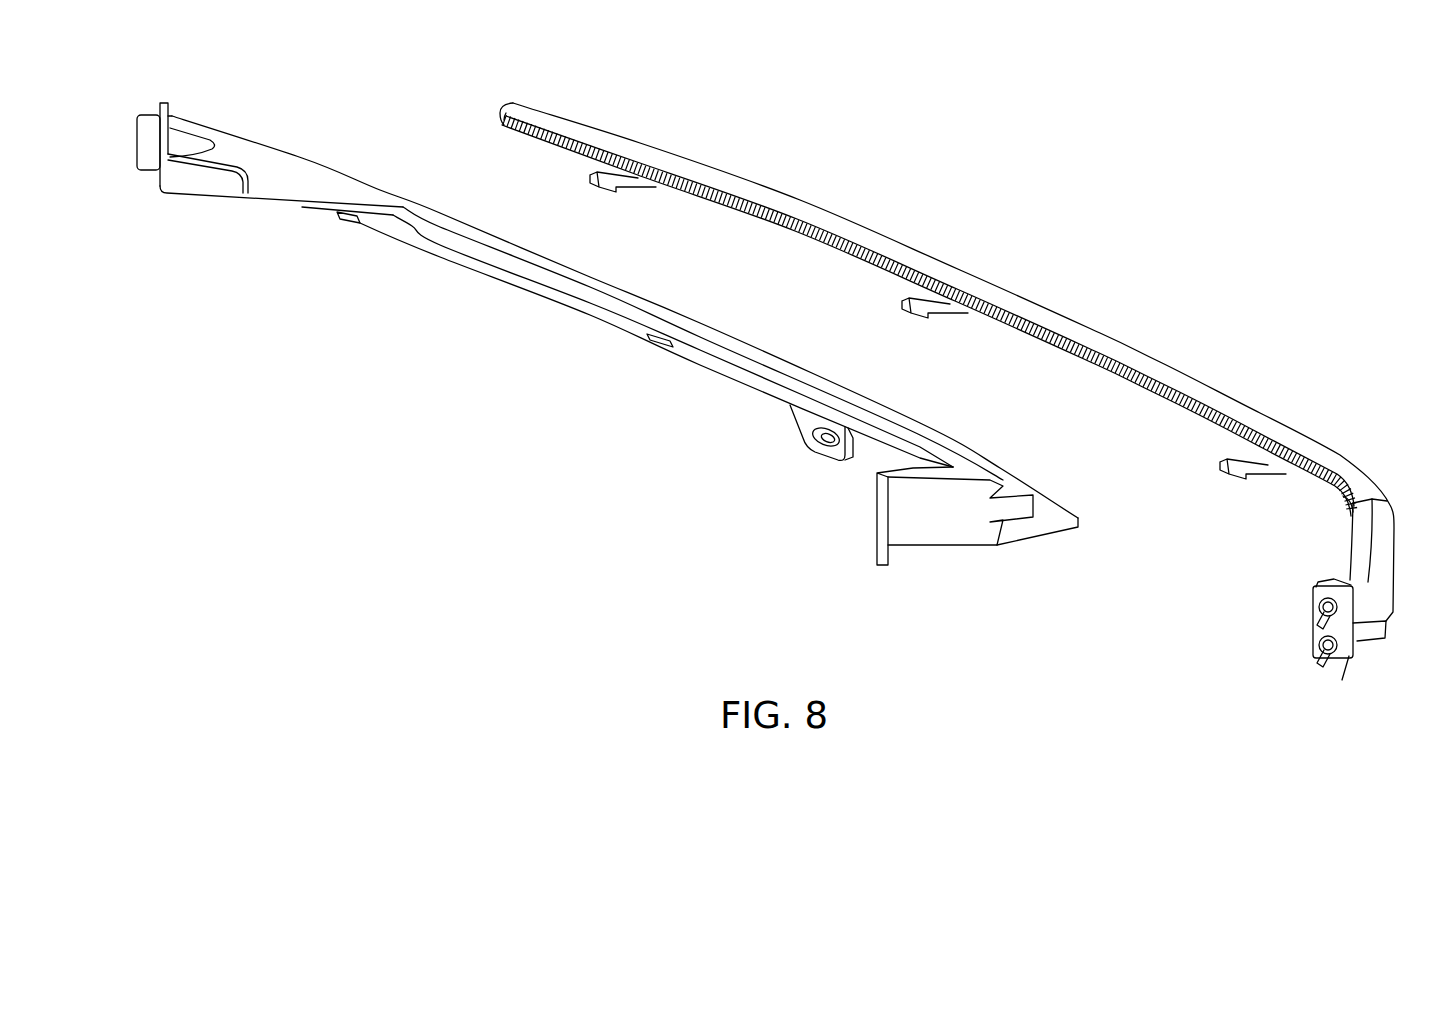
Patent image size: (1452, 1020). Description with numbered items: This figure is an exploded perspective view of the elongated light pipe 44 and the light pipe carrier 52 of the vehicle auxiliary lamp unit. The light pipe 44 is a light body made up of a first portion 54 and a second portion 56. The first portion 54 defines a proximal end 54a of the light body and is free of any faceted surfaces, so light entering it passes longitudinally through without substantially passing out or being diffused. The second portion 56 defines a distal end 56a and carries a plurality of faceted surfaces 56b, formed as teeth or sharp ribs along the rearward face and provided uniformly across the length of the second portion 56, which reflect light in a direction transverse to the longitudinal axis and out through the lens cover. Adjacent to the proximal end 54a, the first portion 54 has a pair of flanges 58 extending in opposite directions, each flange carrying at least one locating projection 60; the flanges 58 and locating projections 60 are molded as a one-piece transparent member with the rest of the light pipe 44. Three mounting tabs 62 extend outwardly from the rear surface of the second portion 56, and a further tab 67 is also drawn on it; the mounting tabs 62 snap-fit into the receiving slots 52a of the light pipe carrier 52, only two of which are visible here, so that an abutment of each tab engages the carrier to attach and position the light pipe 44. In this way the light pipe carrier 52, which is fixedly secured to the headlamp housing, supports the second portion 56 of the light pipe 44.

The elongated light pipe 44 is at (954, 381).
The light pipe carrier 52 is at (302, 158).
The receiving slots 52a is at (348, 219).
The first portion 54 is at (1355, 588).
The proximal end 54a is at (1357, 642).
The second portion 56 is at (941, 337).
The distal end 56a is at (503, 110).
The faceted surfaces 56b is at (793, 232).
The flanges 58 is at (1303, 627).
The locating projection 60 is at (1316, 626).
The mounting tabs 62 is at (640, 190).
The retaining clip 67 is at (1262, 476).